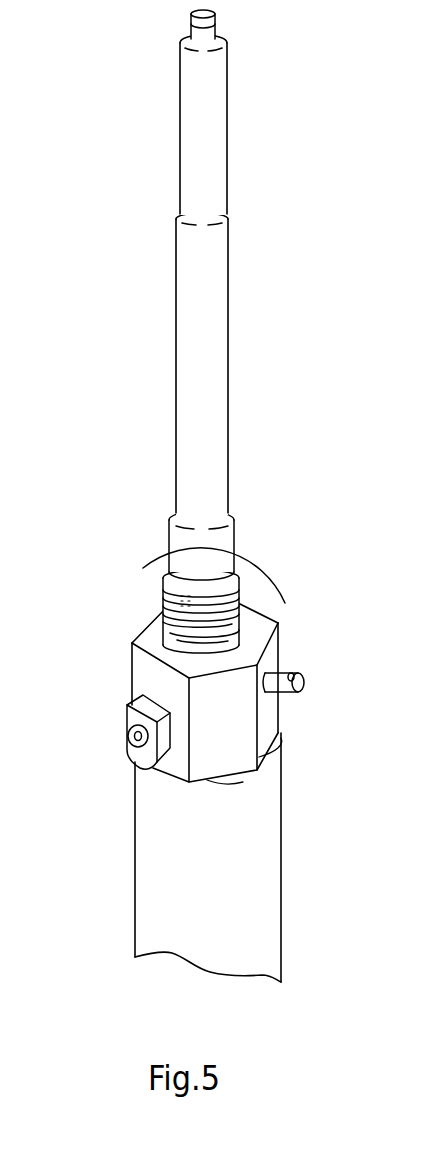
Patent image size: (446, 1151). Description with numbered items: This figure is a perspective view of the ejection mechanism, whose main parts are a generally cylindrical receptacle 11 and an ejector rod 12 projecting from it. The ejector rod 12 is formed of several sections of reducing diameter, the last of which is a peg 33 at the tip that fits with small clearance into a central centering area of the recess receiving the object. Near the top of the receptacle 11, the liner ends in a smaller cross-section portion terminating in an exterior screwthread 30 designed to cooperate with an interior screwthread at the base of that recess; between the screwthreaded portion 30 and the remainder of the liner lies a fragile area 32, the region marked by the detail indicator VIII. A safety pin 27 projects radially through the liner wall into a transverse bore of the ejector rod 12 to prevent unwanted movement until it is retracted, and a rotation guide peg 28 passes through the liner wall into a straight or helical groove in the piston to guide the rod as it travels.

The receptacle 11 is at (283, 815).
The ejector rod 12 is at (236, 365).
The safety pin 27 is at (307, 672).
The rotation guide peg 28 is at (126, 745).
The exterior screwthread 30 is at (164, 584).
The fragile area 32 is at (241, 612).
The peg 33 is at (216, 23).
The view VIII indicator VIII is at (270, 552).